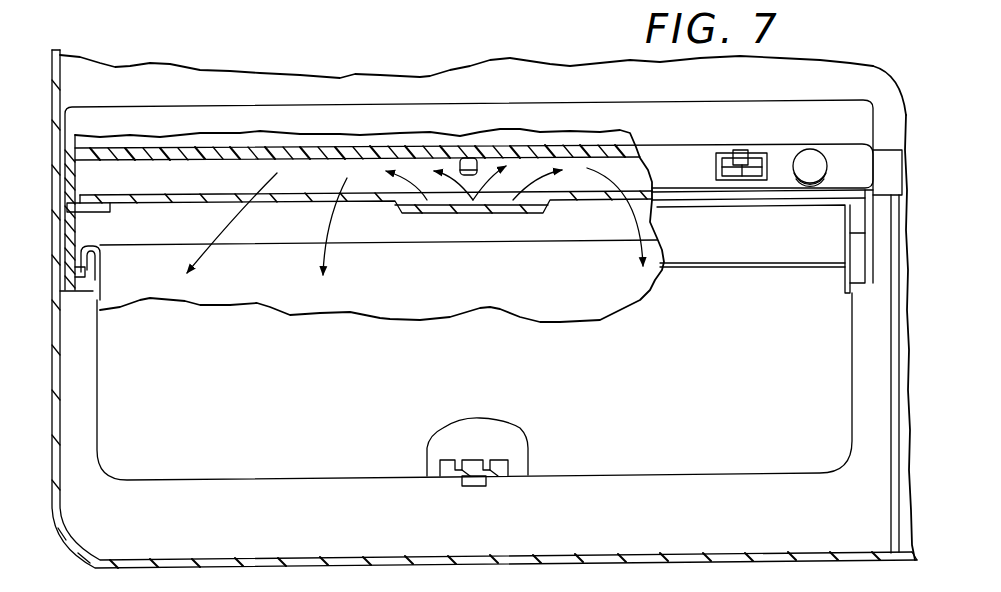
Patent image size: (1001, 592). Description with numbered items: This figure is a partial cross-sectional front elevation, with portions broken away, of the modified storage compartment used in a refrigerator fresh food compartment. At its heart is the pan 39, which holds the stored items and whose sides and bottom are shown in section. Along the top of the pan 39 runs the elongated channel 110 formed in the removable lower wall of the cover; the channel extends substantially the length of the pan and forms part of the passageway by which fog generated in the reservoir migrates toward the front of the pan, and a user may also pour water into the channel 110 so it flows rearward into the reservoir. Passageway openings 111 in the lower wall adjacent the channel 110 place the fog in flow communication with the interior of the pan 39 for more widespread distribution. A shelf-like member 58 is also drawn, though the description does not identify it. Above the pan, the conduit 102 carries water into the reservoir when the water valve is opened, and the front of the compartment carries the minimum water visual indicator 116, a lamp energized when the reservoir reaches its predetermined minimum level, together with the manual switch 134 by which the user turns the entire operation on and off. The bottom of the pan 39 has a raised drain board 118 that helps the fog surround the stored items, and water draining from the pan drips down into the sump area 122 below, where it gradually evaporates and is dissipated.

The pan 39 is at (233, 400).
The shelf 58 is at (303, 178).
The conduit 102 is at (466, 157).
The channel 110 is at (447, 194).
The passageway openings 111 is at (159, 204).
The minimum water visual indicator 116 is at (808, 163).
The raised drain board 118 is at (445, 462).
The sump area 122 is at (258, 559).
The switch 134 is at (740, 150).